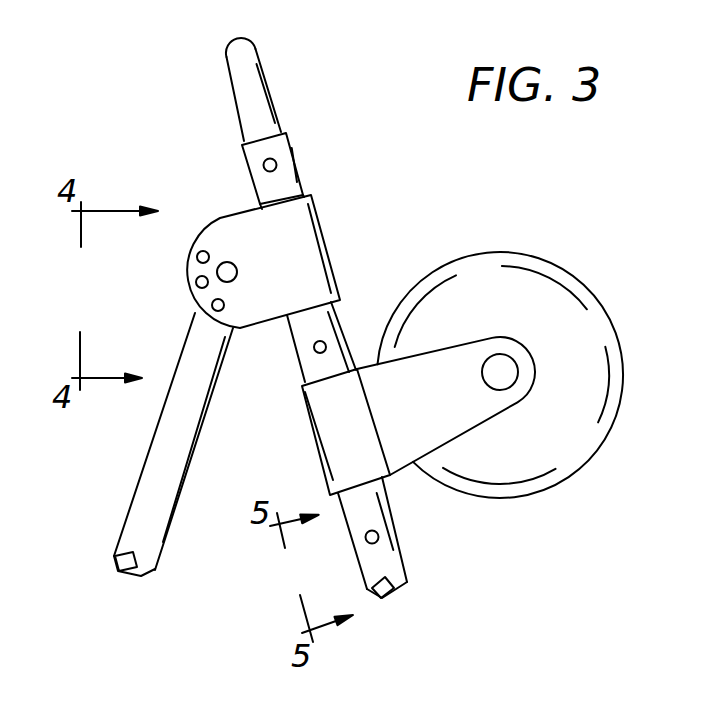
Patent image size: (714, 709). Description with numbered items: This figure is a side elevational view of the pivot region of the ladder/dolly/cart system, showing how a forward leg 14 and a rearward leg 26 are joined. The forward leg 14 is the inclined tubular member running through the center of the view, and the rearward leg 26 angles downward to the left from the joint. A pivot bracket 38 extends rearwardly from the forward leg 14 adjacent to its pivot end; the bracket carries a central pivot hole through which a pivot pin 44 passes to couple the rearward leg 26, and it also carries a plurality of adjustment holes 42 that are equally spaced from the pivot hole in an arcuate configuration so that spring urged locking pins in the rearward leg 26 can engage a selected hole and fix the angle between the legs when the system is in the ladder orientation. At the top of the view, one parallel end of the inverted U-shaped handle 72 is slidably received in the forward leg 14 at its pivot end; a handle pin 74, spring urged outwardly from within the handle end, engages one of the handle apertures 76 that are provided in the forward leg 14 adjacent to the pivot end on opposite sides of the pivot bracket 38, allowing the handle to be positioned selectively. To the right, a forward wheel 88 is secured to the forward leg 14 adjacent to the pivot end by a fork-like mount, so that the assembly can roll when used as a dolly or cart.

The forward leg 14 is at (392, 500).
The rearward leg 26 is at (152, 452).
The pivot bracket 38 is at (272, 258).
The adjustment holes 42 is at (197, 257).
The pivot pin 44 is at (226, 261).
The inverted U-shaped handle 72 is at (262, 57).
The handle pin 74 is at (378, 538).
The handle apertures 76 is at (276, 161).
The forward wheel 88 is at (603, 312).